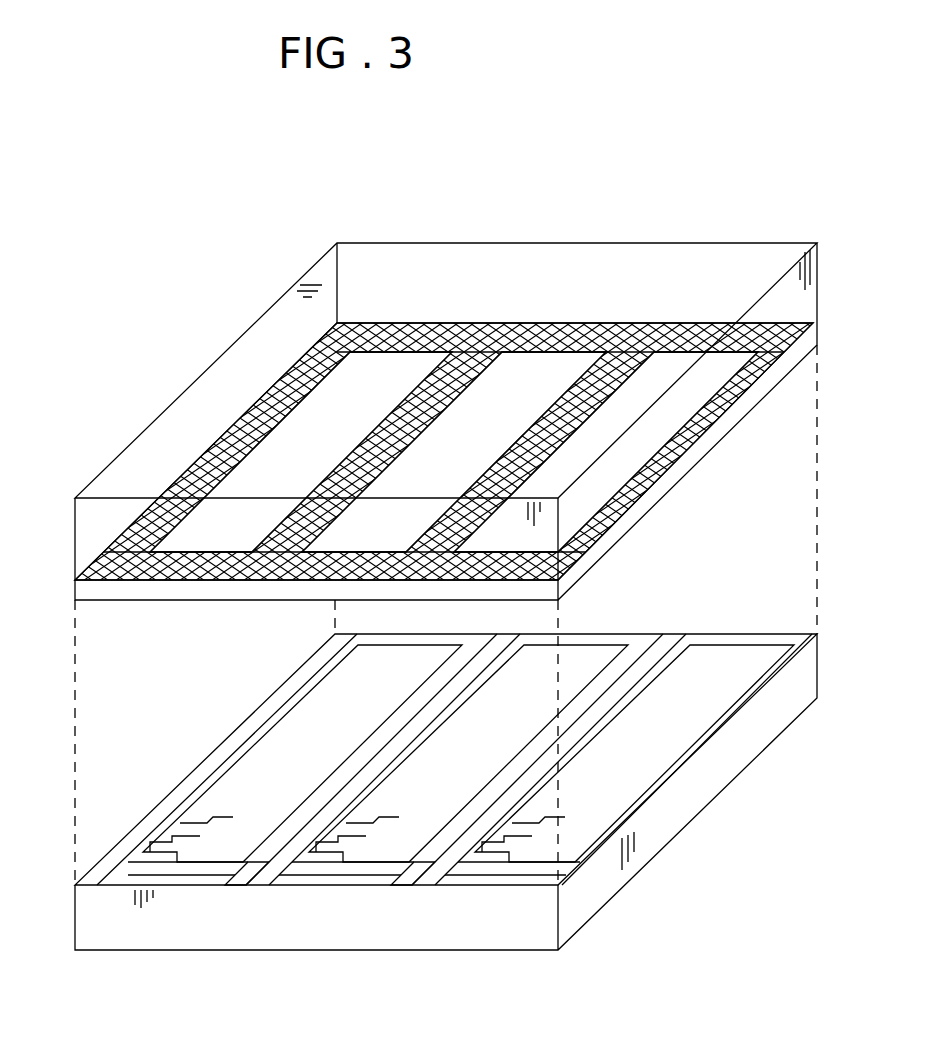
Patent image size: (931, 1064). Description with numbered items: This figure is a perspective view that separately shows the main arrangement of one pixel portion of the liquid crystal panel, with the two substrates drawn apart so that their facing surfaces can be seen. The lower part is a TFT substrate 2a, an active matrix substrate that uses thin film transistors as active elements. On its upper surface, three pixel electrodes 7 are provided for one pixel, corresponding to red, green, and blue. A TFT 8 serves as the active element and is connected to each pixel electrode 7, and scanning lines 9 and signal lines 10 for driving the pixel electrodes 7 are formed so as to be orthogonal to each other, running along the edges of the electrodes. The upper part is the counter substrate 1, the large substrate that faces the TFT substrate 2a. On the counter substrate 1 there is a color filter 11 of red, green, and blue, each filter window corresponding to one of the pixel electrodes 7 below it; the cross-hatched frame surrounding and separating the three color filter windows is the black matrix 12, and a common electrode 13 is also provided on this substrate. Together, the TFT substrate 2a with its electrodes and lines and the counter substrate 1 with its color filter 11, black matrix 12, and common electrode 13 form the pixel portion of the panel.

The counter substrate 1 is at (76, 540).
The TFT substrate 2a is at (102, 942).
The pixel electrode 7 is at (622, 775).
The TFT 8 is at (330, 850).
The scanning line 9 is at (372, 885).
The signal line 10 is at (264, 880).
The color filter 11 is at (395, 372).
The black matrix 12 is at (676, 480).
The common electrode 13 is at (748, 416).